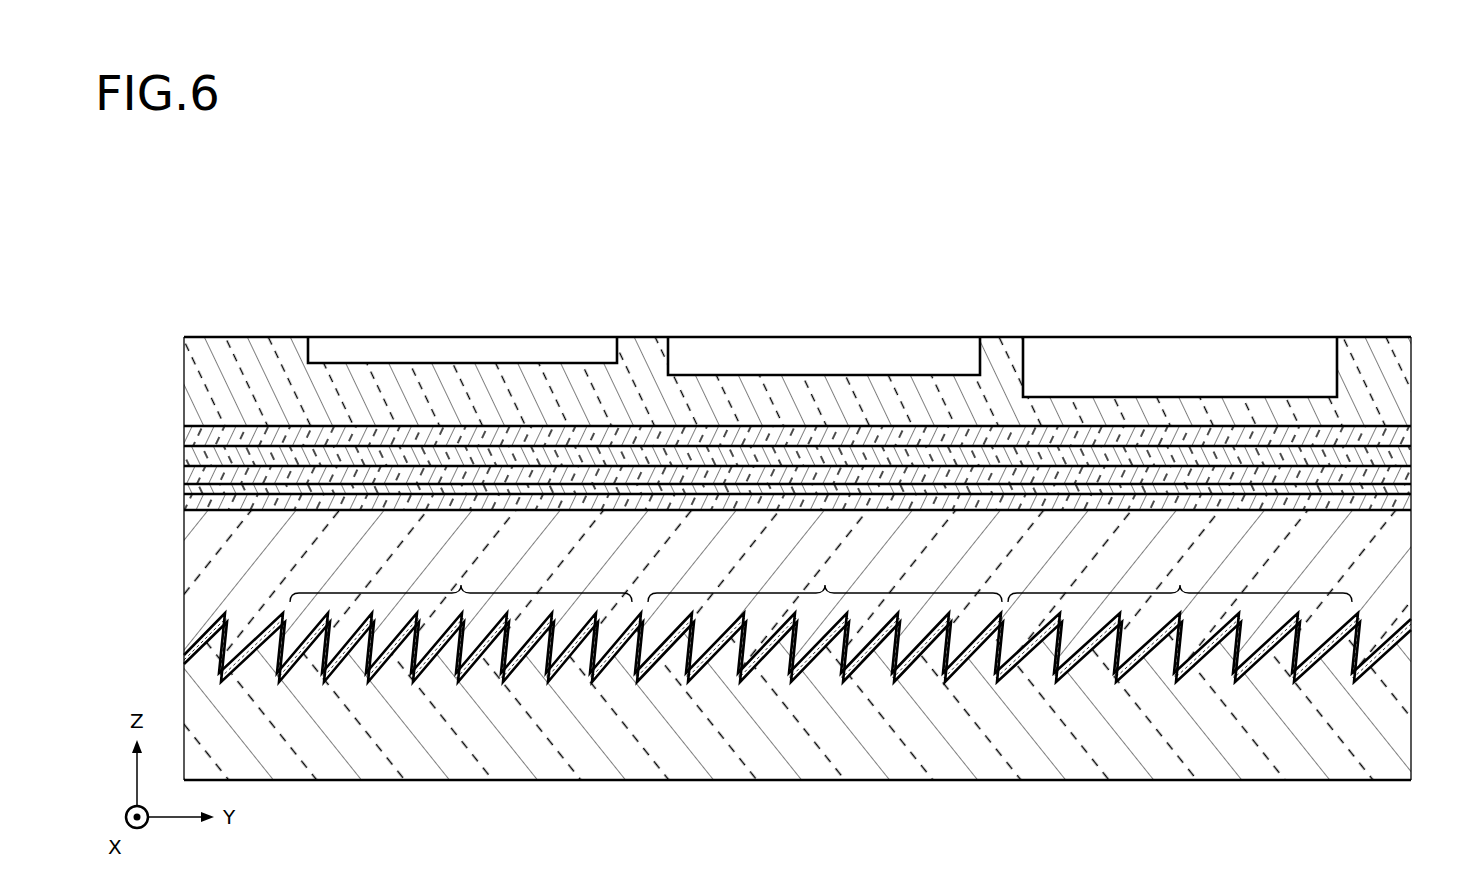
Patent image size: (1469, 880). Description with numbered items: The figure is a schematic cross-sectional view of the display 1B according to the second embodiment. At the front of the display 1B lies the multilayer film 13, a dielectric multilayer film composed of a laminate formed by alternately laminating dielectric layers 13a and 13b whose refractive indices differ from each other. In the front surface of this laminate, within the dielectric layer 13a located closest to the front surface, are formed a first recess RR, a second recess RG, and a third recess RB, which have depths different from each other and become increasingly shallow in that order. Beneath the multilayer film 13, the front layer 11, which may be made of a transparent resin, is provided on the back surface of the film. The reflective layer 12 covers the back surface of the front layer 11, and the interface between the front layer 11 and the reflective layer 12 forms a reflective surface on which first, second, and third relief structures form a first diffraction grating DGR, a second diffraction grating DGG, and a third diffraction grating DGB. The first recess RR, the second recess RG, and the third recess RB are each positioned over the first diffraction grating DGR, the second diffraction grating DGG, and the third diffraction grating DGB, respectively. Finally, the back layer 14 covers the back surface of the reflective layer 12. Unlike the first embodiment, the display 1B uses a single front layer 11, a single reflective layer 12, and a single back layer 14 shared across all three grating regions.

The display 1B is at (793, 503).
The front layer 11 is at (1411, 556).
The reflective layer 12 is at (1411, 630).
The multilayer film 13 is at (793, 404).
The dielectric layer 13a is at (197, 370).
The dielectric layer 13b is at (197, 436).
The back layer 14 is at (1411, 714).
The third recess RB is at (461, 353).
The second recess RG is at (822, 353).
The first recess RR is at (1179, 353).
The third diffraction grating DGB is at (461, 585).
The second diffraction grating DGG is at (825, 585).
The first diffraction grating DGR is at (1180, 585).